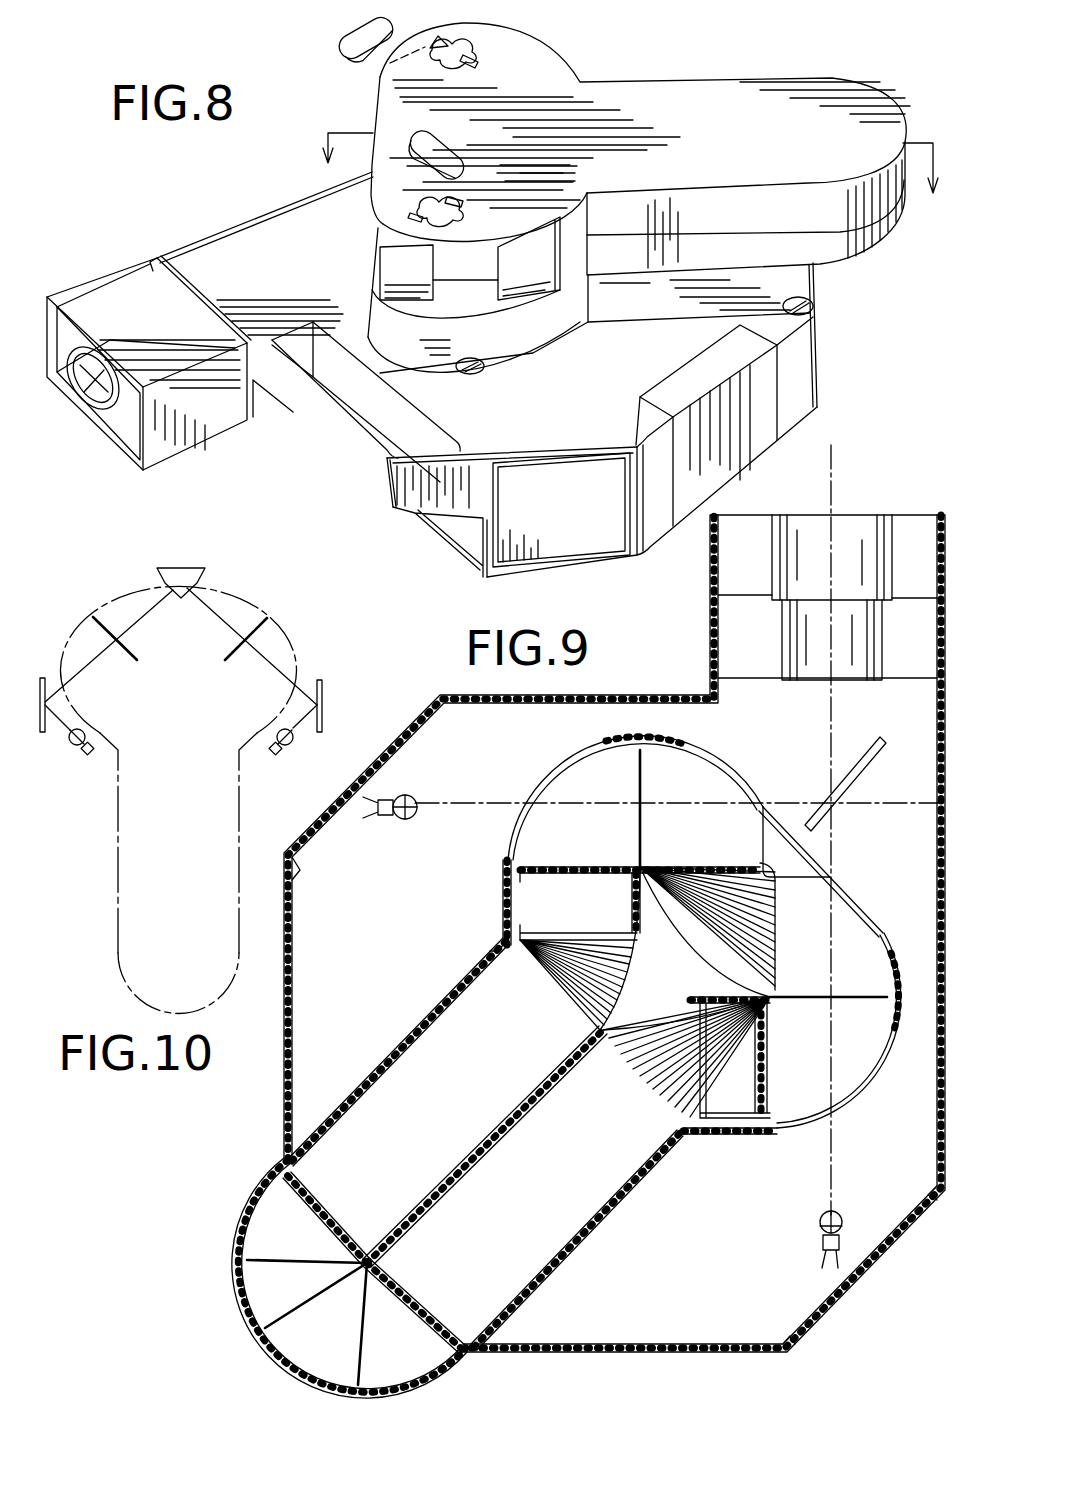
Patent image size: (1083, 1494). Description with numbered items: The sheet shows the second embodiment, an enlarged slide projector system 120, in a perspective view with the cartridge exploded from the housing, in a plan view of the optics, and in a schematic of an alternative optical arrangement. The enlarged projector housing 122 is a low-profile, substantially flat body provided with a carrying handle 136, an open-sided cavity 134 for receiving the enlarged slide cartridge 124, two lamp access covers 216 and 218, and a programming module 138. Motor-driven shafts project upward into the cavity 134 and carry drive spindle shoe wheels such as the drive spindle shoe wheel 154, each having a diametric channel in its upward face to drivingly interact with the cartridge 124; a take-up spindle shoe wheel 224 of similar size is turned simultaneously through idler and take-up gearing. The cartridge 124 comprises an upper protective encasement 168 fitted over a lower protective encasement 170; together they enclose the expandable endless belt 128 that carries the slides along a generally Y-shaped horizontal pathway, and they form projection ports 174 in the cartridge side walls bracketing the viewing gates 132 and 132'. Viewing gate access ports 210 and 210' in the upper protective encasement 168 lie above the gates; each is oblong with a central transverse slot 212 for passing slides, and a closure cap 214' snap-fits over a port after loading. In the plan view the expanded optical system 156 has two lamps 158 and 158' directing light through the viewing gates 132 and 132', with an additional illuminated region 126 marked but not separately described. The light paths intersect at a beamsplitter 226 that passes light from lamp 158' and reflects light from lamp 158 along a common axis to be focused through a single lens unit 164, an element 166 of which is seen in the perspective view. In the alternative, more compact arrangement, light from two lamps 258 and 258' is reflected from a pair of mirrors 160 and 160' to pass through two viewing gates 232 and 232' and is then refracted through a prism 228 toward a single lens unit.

In FIG. 8, the enlarged slide projector system 120 is at (745, 72).
In FIG. 9, the enlarged slide projector system 120 is at (848, 1290).
In FIG. 8, the enlarged projector housing 122 is at (215, 230).
In FIG. 9, the enlarged projector housing 122 is at (956, 843).
In FIG. 8, the enlarged slide cartridge 124 is at (660, 82).
In FIG. 9, the enlarged slide cartridge 124 is at (236, 1265).
In FIG. 9, the first light fan pattern 126 is at (540, 990).
In FIG. 9, the expandable endless belt 128 is at (560, 1095).
In FIG. 9, the viewing gate 132 is at (647, 873).
In FIG. 9, the viewing gate 132' is at (745, 1057).
In FIG. 8, the open-sided cavity 134 is at (645, 304).
In FIG. 8, the carrying handle 136 is at (360, 470).
In FIG. 8, the programming module 138 is at (755, 406).
In FIG. 8, the drive spindle shoe wheel 154 is at (475, 375).
In FIG. 9, the expanded optical system 156 is at (427, 828).
In FIG. 10, the expanded optical system 156 is at (247, 722).
In FIG. 9, the lamp 158 is at (407, 786).
In FIG. 9, the lamp 158' is at (861, 1230).
In FIG. 10, the mirrors 160 is at (86, 705).
In FIG. 10, the second lens 160' is at (340, 705).
In FIG. 8, the single lens unit 164 is at (138, 290).
In FIG. 9, the single lens unit 164 is at (852, 537).
In FIG. 8, the ring 166 is at (85, 410).
In FIG. 8, the upper protective encasement 168 is at (793, 149).
In FIG. 8, the lower protective encasement 170 is at (785, 259).
In FIG. 8, the projection ports 174 is at (422, 280).
In FIG. 9, the projection ports 174 is at (582, 785).
In FIG. 8, the viewing gate access port 210 is at (471, 216).
In FIG. 8, the viewing gate access port 210' is at (462, 48).
In FIG. 8, the slot 212 is at (476, 63).
In FIG. 8, the closure cap 214' is at (379, 100).
In FIG. 8, the lamp access cover 216 is at (606, 550).
In FIG. 9, the lamp access cover 216 is at (388, 754).
In FIG. 9, the lamp access cover 218 is at (862, 1262).
In FIG. 8, the take-up spindle shoe wheel 224 is at (815, 308).
In FIG. 9, the beamsplitter 226 is at (872, 768).
In FIG. 10, the prism 228 is at (190, 574).
In FIG. 10, the viewing gate 232 is at (111, 610).
In FIG. 10, the viewing gate 232' is at (272, 612).
In FIG. 10, the lamp 258 is at (80, 764).
In FIG. 10, the lamp 258' is at (279, 761).